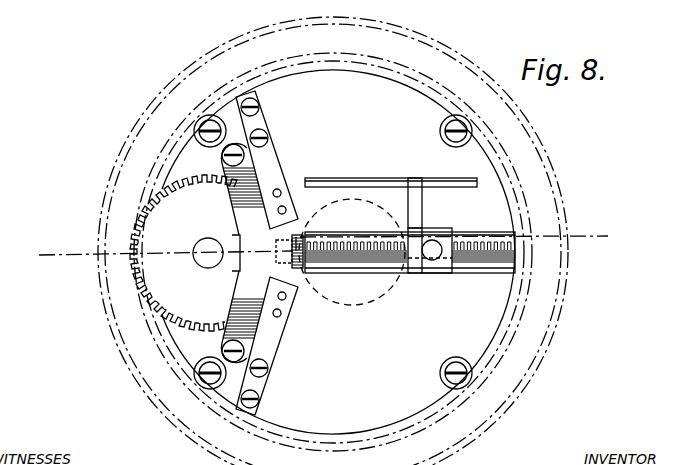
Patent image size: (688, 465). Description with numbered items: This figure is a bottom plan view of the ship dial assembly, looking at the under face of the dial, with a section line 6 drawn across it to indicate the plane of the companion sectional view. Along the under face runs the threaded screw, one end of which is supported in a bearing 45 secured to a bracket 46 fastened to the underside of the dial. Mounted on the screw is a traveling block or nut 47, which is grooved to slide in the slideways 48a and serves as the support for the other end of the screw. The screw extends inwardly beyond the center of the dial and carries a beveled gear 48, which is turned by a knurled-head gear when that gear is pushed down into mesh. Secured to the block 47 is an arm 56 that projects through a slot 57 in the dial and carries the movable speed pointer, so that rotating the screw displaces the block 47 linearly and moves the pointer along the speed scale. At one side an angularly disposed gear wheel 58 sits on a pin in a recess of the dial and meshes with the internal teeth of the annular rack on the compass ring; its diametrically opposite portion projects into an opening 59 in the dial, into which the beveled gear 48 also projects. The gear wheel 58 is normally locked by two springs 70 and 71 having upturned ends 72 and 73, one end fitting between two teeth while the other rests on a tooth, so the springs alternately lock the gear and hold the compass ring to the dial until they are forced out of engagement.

The section line 6- 6 is at (39, 270).
The bearing 45 is at (277, 246).
The bracket 46 is at (237, 224).
The traveling block or nut 47 is at (447, 236).
The beveled gear 48 is at (410, 250).
The slideways 48a is at (461, 269).
The arm 56 is at (417, 208).
The slot 57 is at (404, 164).
The gear wheel 58 is at (203, 186).
The opening 59 is at (309, 303).
The spring 70 is at (242, 284).
The spring 71 is at (278, 161).
The upturned end 72 is at (306, 281).
The upturned end 73 is at (300, 231).